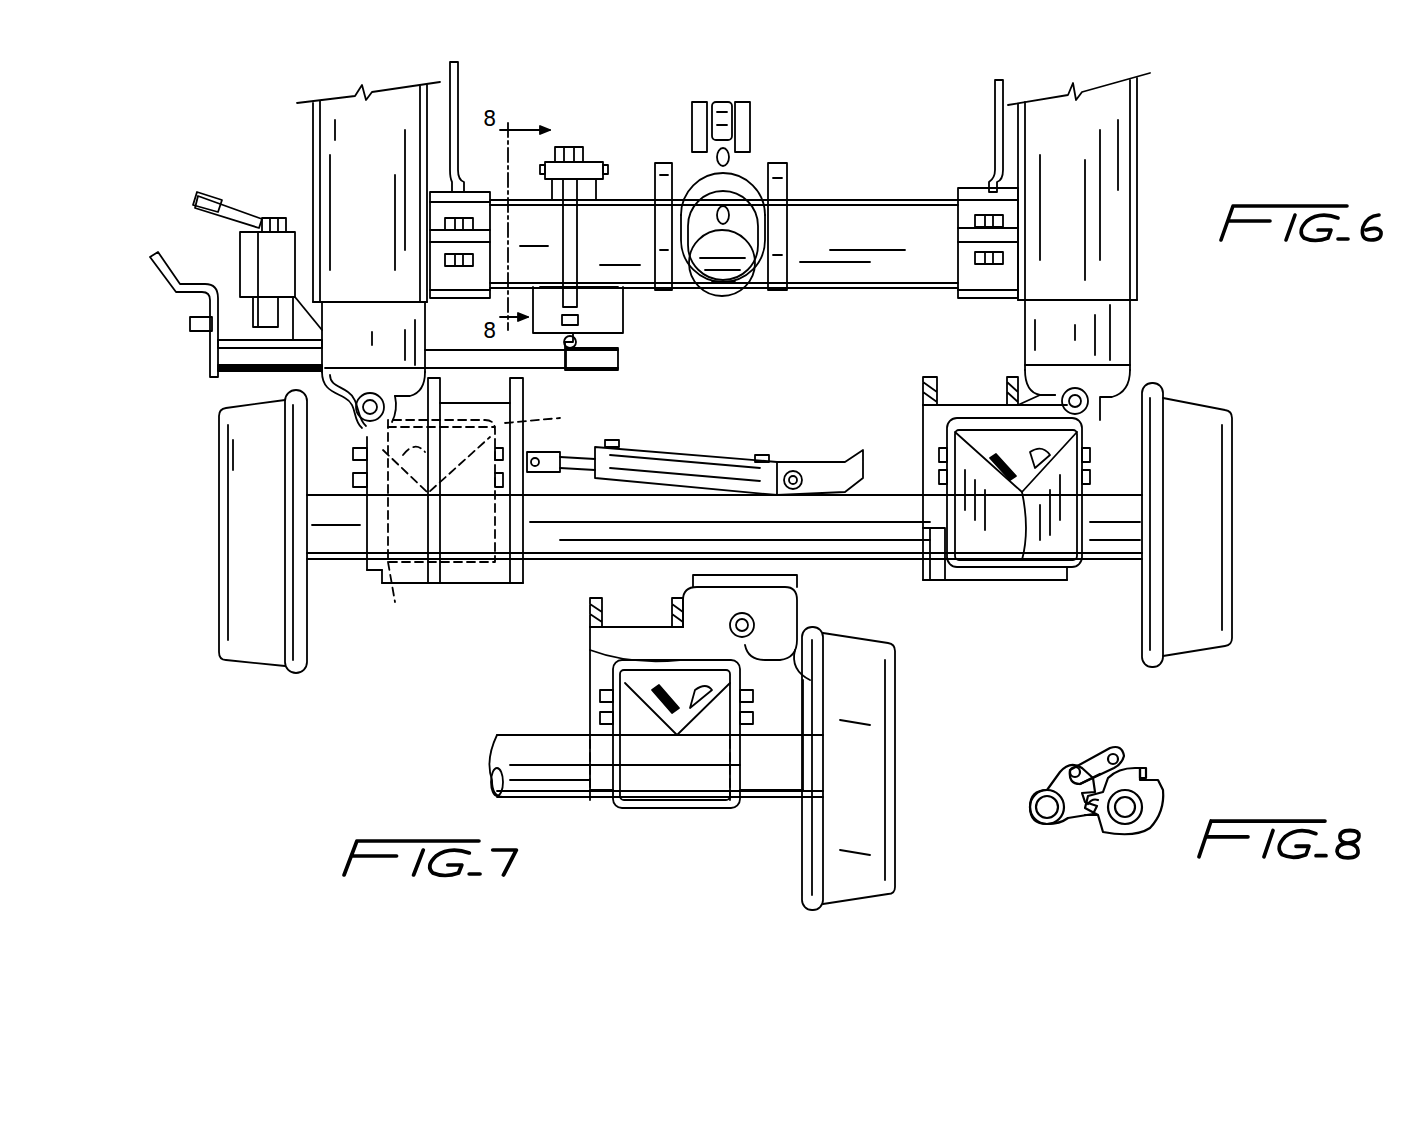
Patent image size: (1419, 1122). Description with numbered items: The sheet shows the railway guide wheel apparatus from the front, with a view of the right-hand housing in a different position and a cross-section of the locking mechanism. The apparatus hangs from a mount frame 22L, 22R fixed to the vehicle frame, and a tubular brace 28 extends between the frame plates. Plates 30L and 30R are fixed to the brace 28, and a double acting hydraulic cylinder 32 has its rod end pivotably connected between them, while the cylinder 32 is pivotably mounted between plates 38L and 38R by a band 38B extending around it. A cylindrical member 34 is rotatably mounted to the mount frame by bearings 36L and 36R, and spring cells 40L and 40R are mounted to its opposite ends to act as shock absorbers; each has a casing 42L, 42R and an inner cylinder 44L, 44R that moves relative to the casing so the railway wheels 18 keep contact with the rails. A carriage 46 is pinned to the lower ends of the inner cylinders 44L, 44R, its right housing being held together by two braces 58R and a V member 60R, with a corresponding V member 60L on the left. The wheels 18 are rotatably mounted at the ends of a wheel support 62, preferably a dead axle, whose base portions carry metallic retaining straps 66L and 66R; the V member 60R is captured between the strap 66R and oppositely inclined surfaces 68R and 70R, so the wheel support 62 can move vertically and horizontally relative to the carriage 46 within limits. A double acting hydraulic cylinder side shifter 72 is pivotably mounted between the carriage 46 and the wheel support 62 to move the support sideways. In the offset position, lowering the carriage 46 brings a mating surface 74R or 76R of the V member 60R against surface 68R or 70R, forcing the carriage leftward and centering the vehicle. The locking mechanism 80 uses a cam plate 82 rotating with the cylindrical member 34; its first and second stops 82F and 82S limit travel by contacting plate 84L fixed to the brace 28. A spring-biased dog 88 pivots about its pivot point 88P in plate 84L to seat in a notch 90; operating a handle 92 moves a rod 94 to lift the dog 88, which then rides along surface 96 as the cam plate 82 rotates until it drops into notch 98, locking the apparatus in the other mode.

In FIG. 7, the railway wheels 18 is at (897, 755).
In FIG. 6, the mount frame (left side) 22L is at (448, 72).
In FIG. 6, the mount frame (right side) 22R is at (1005, 95).
In FIG. 8, the tubular brace 28 is at (1032, 798).
In FIG. 6, the left plate 30L is at (692, 104).
In FIG. 6, the right plate 30R is at (750, 104).
In FIG. 6, the double acting hydraulic cylinder 32 is at (715, 297).
In FIG. 6, the cylindrical member 34 is at (876, 198).
In FIG. 8, the cylindrical member 34 is at (1150, 806).
In FIG. 6, the left bearing 36L is at (482, 195).
In FIG. 6, the right bearing 36R is at (962, 188).
In FIG. 6, the left plate 38L is at (652, 165).
In FIG. 6, the right plate 38R is at (790, 170).
In FIG. 6, the band 38B is at (758, 140).
In FIG. 6, the left spring cell 40L is at (436, 92).
In FIG. 6, the right spring cell 40R is at (1140, 135).
In FIG. 6, the left casing 42L is at (314, 160).
In FIG. 6, the casing 42R is at (1140, 195).
In FIG. 6, the left inner cylinder 44L is at (322, 355).
In FIG. 6, the inner cylinder 44R is at (1136, 340).
In FIG. 7, the carriage 46 is at (780, 625).
In FIG. 7, the braces 58R is at (670, 600).
In FIG. 6, the left V member 60L is at (438, 511).
In FIG. 6, the V member 60R is at (1022, 570).
In FIG. 7, the V member 60R is at (600, 645).
In FIG. 7, the wheel support 62 is at (550, 733).
In FIG. 6, the left retaining strap 66L is at (553, 417).
In FIG. 6, the retaining strap 66R is at (972, 418).
In FIG. 7, the retaining strap 66R is at (745, 675).
In FIG. 7, the inclined surface 68R is at (715, 700).
In FIG. 7, the inclined surface 70R is at (655, 690).
In FIG. 6, the hydraulic cylinder side shifter 72 is at (700, 450).
In FIG. 7, the mating surface 74R is at (705, 700).
In FIG. 7, the mating surface 76R is at (660, 690).
In FIG. 6, the locking mechanism 80 is at (593, 146).
In FIG. 6, the cam plate 82 is at (575, 245).
In FIG. 8, the cam plate 82 is at (1135, 834).
In FIG. 8, the first stop 82F is at (1092, 822).
In FIG. 8, the second stop 82S is at (1150, 770).
In FIG. 8, the plate 84L is at (1032, 815).
In FIG. 8, the dog 88 is at (1105, 750).
In FIG. 8, the pivot point 88P is at (1073, 767).
In FIG. 8, the notch 90 is at (1100, 832).
In FIG. 6, the handle 92 is at (165, 270).
In FIG. 6, the rod 94 is at (545, 375).
In FIG. 8, the surface 96 is at (1142, 766).
In FIG. 8, the notch 98 is at (1160, 785).